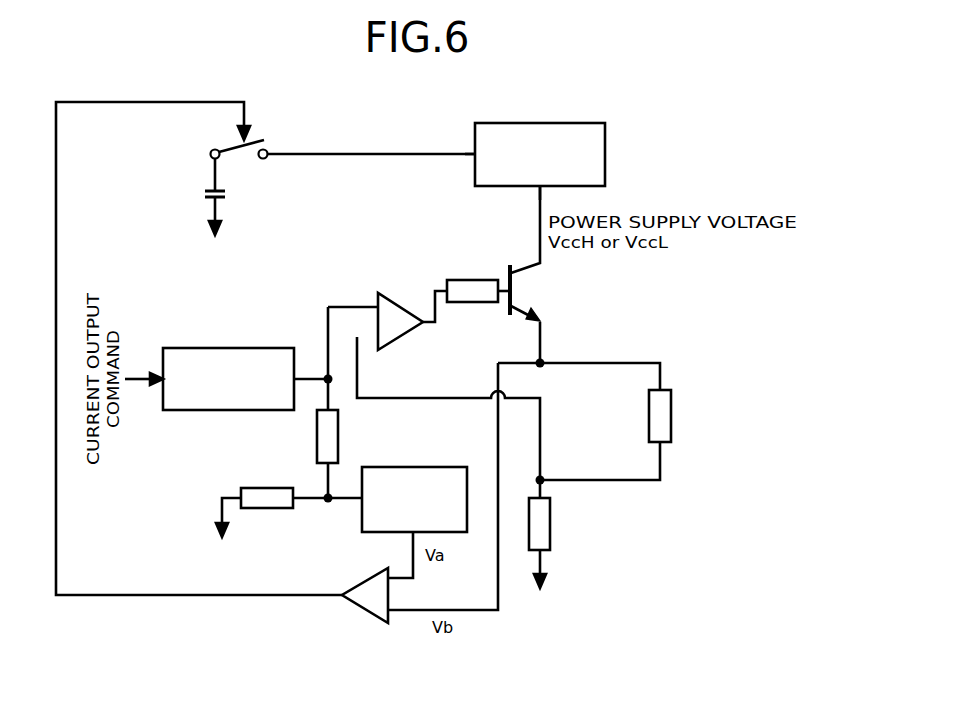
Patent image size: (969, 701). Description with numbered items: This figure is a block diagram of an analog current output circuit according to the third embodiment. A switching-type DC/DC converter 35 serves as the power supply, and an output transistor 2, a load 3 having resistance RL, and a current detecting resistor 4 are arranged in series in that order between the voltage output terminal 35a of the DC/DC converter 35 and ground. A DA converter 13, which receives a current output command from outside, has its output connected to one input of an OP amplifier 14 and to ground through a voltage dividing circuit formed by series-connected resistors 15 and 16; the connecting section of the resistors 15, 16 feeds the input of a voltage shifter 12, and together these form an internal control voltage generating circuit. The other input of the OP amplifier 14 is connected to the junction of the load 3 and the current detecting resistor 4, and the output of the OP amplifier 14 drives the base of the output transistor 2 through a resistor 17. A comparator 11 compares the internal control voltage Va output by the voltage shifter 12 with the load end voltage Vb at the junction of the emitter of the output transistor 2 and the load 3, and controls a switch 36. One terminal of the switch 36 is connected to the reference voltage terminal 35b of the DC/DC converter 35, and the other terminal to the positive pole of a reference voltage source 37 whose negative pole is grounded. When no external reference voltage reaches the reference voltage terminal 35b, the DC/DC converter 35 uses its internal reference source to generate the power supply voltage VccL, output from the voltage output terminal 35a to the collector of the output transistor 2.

The output transistor 2 is at (505, 307).
The load 3 is at (672, 415).
The current detecting resistor 4 is at (551, 524).
The comparator 11 is at (365, 613).
The voltage shifter 12 is at (435, 467).
The DA converter 13 is at (272, 348).
The OP amplifier 14 is at (390, 296).
The resistor 15 is at (340, 436).
The resistor 16 is at (278, 488).
The resistor 17 is at (487, 280).
The DC/DC converter 35 is at (590, 123).
The voltage output terminal 35a is at (539, 190).
The reference voltage terminal 35b is at (475, 152).
The switch 36 is at (242, 160).
The reference voltage source 37 is at (205, 191).